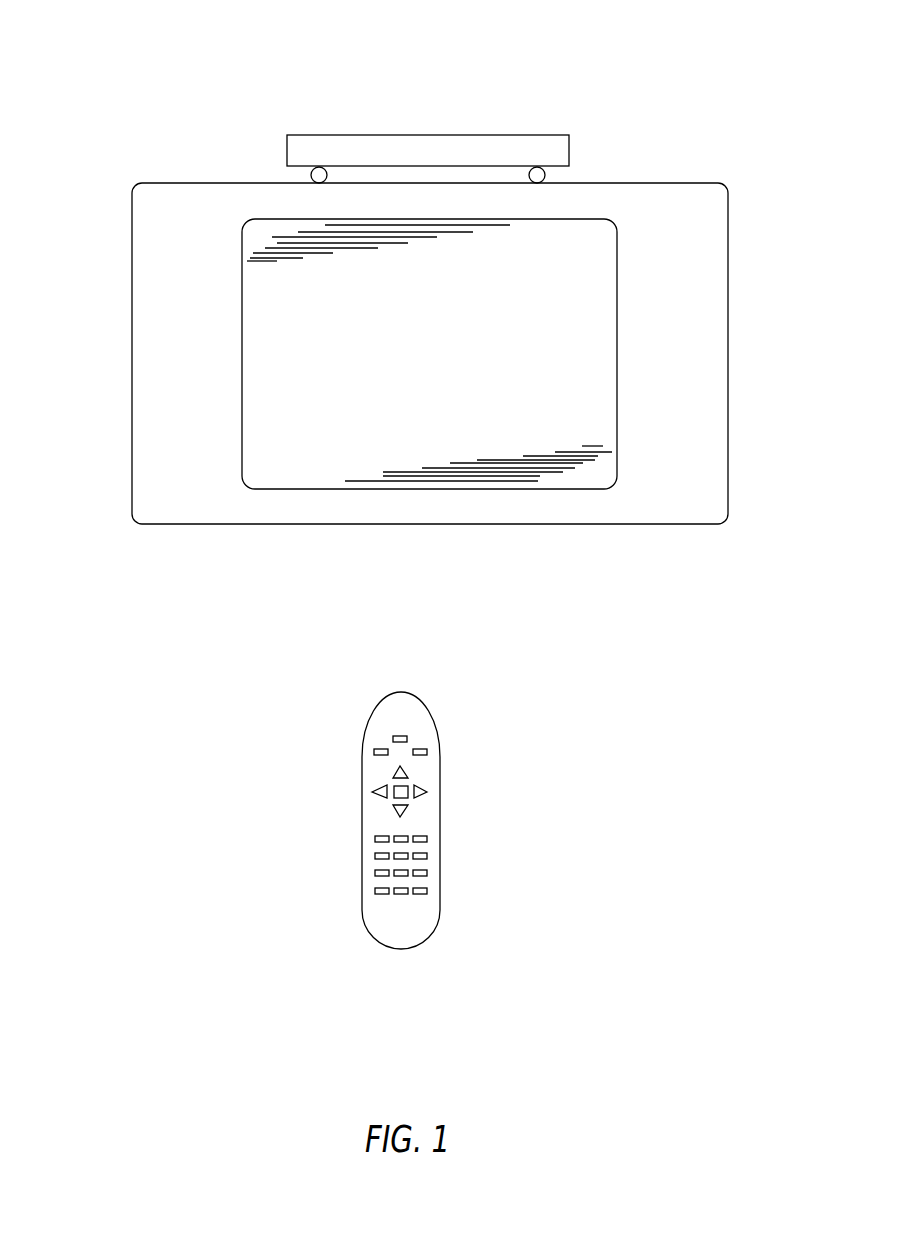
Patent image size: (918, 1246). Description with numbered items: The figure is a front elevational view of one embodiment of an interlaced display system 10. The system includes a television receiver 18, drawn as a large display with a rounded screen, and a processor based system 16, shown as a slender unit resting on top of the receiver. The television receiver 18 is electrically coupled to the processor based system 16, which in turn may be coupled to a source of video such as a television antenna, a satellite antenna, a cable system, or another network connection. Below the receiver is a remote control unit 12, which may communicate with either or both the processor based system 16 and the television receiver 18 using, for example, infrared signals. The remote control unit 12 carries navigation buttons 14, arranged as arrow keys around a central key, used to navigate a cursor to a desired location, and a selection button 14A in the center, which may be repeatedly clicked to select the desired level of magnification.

The interlaced display system 10 is at (776, 87).
The remote control unit 12 is at (437, 820).
The navigation buttons 14 is at (355, 769).
The selection button 14A is at (472, 823).
The processor based system 16 is at (428, 134).
The television receiver 18 is at (385, 353).